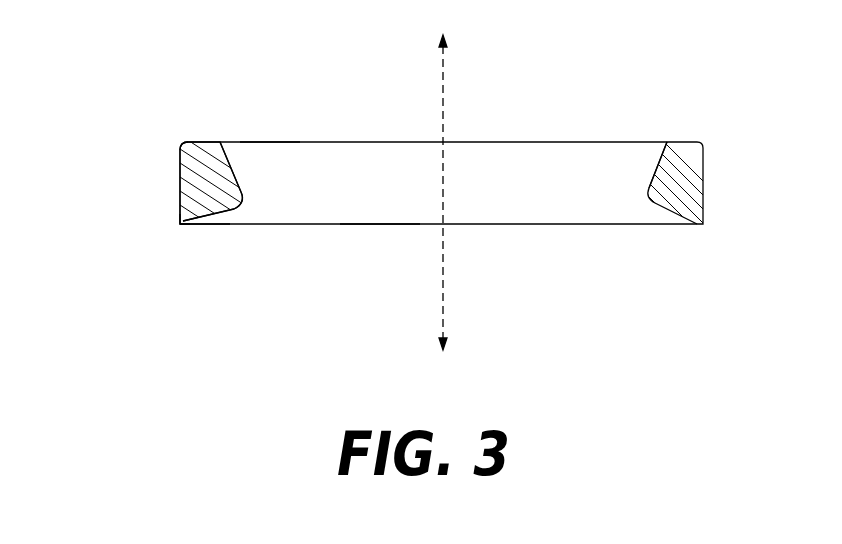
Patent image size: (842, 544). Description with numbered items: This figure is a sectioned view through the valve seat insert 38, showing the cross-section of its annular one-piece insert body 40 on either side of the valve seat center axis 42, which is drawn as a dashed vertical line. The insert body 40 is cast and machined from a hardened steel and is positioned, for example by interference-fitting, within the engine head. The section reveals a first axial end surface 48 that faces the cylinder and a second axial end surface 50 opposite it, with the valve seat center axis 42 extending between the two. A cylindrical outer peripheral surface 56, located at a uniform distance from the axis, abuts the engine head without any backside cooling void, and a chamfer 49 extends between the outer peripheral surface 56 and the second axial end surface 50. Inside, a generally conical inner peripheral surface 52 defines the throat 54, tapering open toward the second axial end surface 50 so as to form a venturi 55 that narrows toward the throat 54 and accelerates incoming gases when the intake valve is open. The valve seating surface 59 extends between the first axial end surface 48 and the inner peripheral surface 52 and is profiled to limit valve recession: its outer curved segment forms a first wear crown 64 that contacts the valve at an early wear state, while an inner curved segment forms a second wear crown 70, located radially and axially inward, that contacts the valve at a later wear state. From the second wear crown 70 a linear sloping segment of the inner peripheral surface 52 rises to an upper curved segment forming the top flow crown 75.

The valve seat insert 38 is at (740, 128).
The insert body 40 is at (681, 142).
The valve seat center axis 42 is at (443, 302).
The first axial end surface 48 is at (180, 224).
The chamfer 49 is at (183, 150).
The second axial end surface 50 is at (200, 141).
The inner peripheral surface 52 is at (258, 172).
The throat 54 is at (368, 195).
The venturi 55 is at (652, 163).
The outer peripheral surface 56 is at (168, 185).
The valve seating surface 59 is at (227, 211).
The first wear crown 64 is at (195, 229).
The second wear crown 70 is at (248, 204).
The top flow crown 75 is at (228, 139).